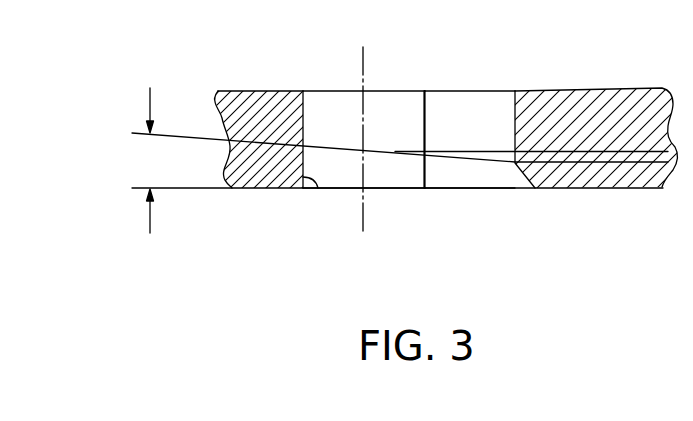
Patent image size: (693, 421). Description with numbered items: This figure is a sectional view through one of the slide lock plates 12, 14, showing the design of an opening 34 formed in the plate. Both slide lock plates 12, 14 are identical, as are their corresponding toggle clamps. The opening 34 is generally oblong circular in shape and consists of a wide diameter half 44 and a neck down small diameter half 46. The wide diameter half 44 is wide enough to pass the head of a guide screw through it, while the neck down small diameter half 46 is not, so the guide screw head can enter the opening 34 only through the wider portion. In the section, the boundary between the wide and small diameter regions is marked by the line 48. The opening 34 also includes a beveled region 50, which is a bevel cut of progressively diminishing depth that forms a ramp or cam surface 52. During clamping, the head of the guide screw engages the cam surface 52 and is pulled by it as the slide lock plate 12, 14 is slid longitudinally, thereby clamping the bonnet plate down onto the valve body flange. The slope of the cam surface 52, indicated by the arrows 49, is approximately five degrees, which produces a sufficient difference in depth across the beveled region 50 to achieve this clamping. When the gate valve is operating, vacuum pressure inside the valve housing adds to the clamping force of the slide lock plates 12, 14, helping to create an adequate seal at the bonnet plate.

The slide lock plate 12 is at (401, 181).
The slide lock plate 14 is at (263, 188).
The opening 34 is at (318, 188).
The wide diameter half 44 is at (338, 110).
The neck down small diameter half 46 is at (463, 106).
The line delineating the wide and small diameter regions 48 is at (423, 110).
The arrows 49 is at (148, 103).
The beveled region 50 is at (473, 146).
The cam surface 52 is at (442, 163).